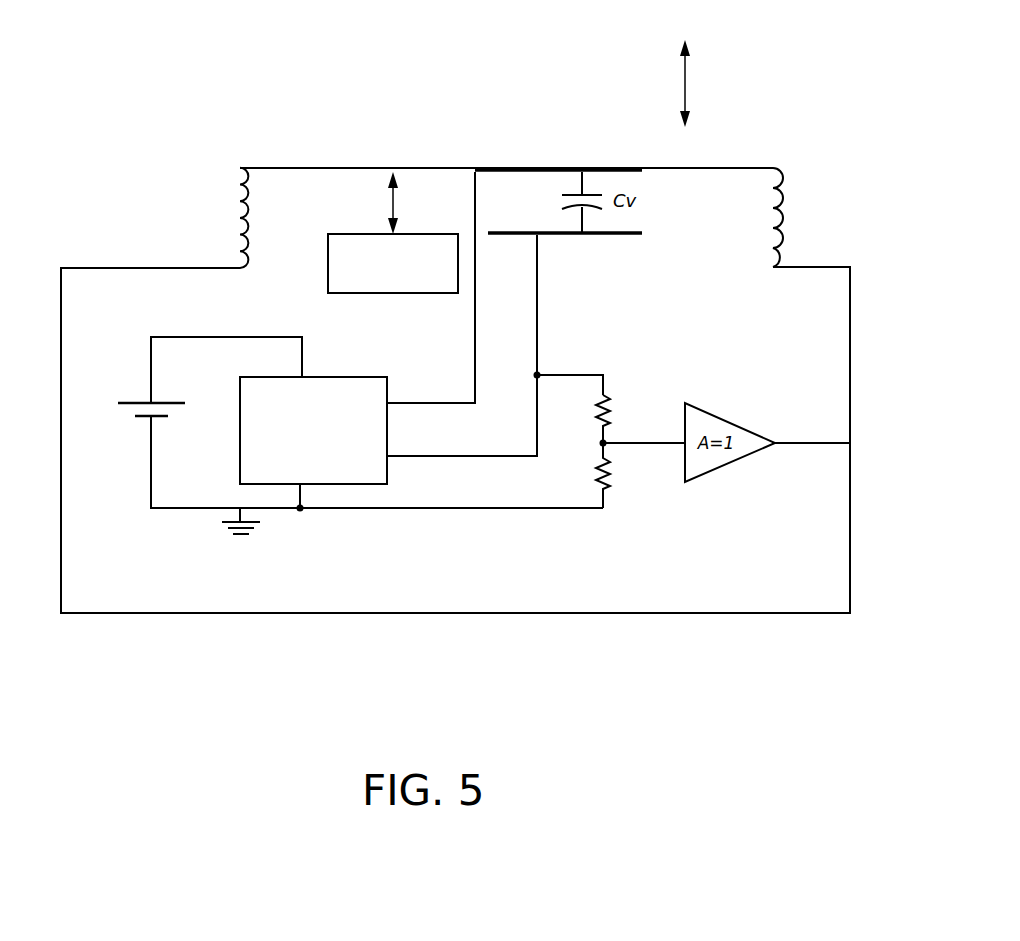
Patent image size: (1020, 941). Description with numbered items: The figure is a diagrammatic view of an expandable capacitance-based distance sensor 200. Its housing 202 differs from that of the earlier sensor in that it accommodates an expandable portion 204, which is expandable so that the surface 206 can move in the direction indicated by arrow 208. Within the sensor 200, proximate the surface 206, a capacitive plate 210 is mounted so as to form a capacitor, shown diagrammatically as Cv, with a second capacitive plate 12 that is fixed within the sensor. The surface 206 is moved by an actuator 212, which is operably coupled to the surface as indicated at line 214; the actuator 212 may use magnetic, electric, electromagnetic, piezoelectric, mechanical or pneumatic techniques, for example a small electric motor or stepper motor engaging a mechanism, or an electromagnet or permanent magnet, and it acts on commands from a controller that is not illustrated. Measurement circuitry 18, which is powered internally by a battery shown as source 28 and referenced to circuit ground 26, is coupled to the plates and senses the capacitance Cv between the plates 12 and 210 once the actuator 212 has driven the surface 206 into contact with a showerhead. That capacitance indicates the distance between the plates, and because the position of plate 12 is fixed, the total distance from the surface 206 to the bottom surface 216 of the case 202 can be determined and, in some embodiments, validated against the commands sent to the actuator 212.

The sensor 200 is at (657, 656).
The housing 202 is at (850, 380).
The expandable portion 204 is at (783, 227).
The surface 206 is at (715, 167).
The arrow 208 is at (683, 80).
The capacitive plate 210 is at (643, 172).
The capacitive plate 12 is at (625, 237).
The actuator 212 is at (393, 263).
The line 214 is at (391, 193).
The measurement circuitry 18 is at (313, 430).
The source 28 is at (147, 419).
The circuit ground 26 is at (228, 515).
The bottom surface 216 is at (418, 613).